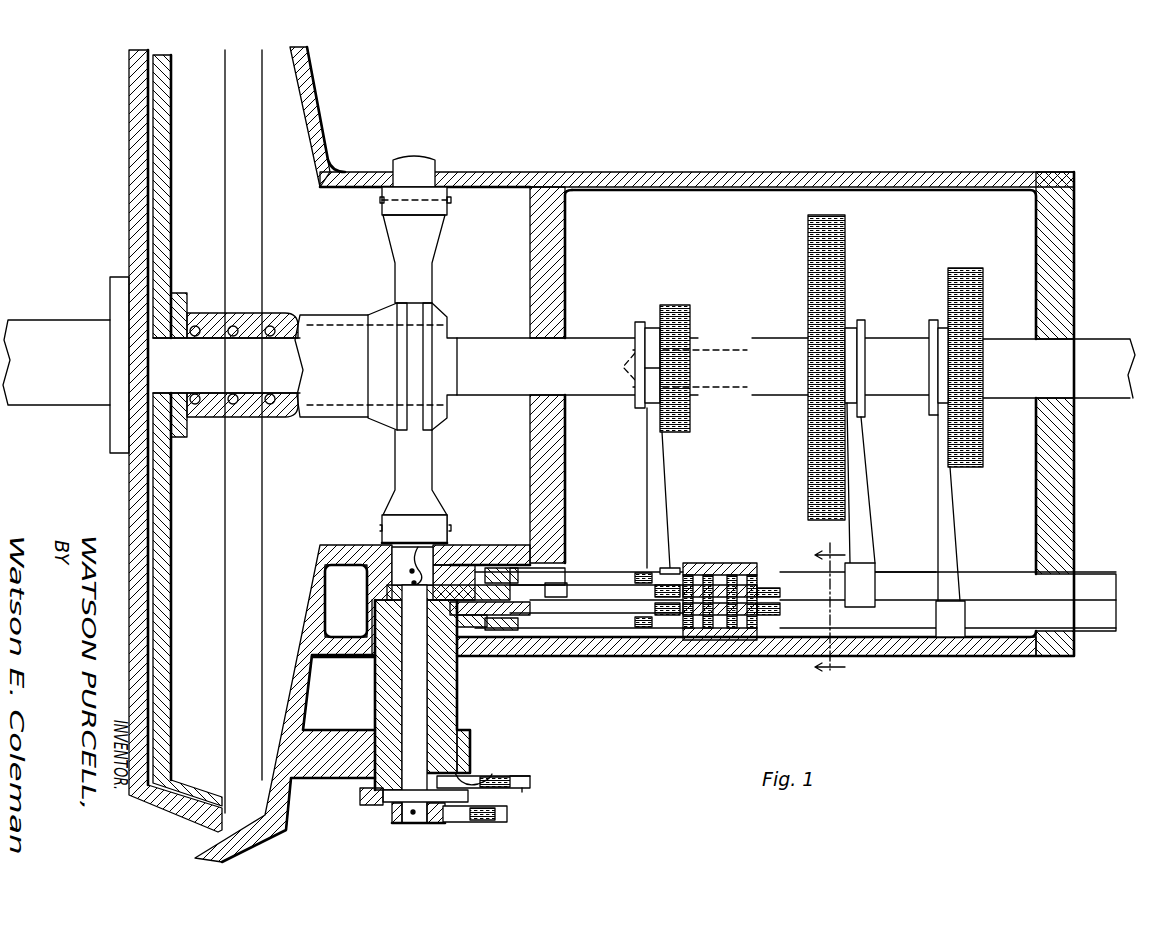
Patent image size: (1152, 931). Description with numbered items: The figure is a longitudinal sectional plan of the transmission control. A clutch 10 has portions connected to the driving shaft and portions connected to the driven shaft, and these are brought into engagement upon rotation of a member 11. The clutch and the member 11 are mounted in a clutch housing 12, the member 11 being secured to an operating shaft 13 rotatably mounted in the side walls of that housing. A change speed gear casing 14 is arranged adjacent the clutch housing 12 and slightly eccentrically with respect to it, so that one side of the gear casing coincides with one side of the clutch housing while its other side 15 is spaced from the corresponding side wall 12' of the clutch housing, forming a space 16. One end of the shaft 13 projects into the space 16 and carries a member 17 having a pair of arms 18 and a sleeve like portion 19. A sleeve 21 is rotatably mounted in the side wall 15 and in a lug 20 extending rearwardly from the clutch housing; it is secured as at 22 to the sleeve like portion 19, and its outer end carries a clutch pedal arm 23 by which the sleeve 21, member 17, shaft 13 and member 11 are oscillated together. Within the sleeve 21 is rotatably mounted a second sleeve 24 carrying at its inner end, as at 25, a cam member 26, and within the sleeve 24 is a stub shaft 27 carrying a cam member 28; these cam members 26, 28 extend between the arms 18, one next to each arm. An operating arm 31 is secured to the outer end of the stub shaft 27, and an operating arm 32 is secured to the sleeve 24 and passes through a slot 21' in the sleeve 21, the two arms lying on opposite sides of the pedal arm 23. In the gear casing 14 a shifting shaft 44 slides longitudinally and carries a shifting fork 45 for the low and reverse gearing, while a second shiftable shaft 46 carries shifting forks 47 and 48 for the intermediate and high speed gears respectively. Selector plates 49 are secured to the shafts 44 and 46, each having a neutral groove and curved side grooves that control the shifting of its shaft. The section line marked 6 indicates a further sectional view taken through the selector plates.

The section line 6- 6 is at (828, 614).
The clutch 10 is at (171, 547).
The member 11 is at (393, 468).
The clutch housing 12 is at (682, 122).
The side wall of clutch housing 12' is at (481, 536).
The operating shaft 13 is at (450, 543).
The change speed gear casing 14 is at (761, 190).
The side of gear casing 15 is at (609, 648).
The space 16 is at (568, 537).
The member 17 is at (372, 625).
The arms 18 is at (633, 632).
The sleeve like portion 19 is at (362, 618).
The lug 20 is at (344, 738).
The sleeve 21 is at (401, 695).
The slot 21' is at (487, 760).
The securing point 22 is at (343, 669).
The clutch pedal arm 23 is at (362, 802).
The second sleeve 24 is at (448, 685).
The securing point 25 is at (470, 620).
The cam member 26 is at (500, 606).
The stub shaft 27 is at (420, 556).
The cam member 28 is at (568, 556).
The operating arm 31 is at (397, 825).
The operating arm 32 is at (490, 776).
The shifting shaft 44 is at (993, 615).
The shifting fork 45 is at (958, 497).
The second shiftable shaft 46 is at (897, 576).
The shifting fork 47 is at (860, 466).
The shifting fork 48 is at (667, 508).
The selector plates 49 is at (768, 588).